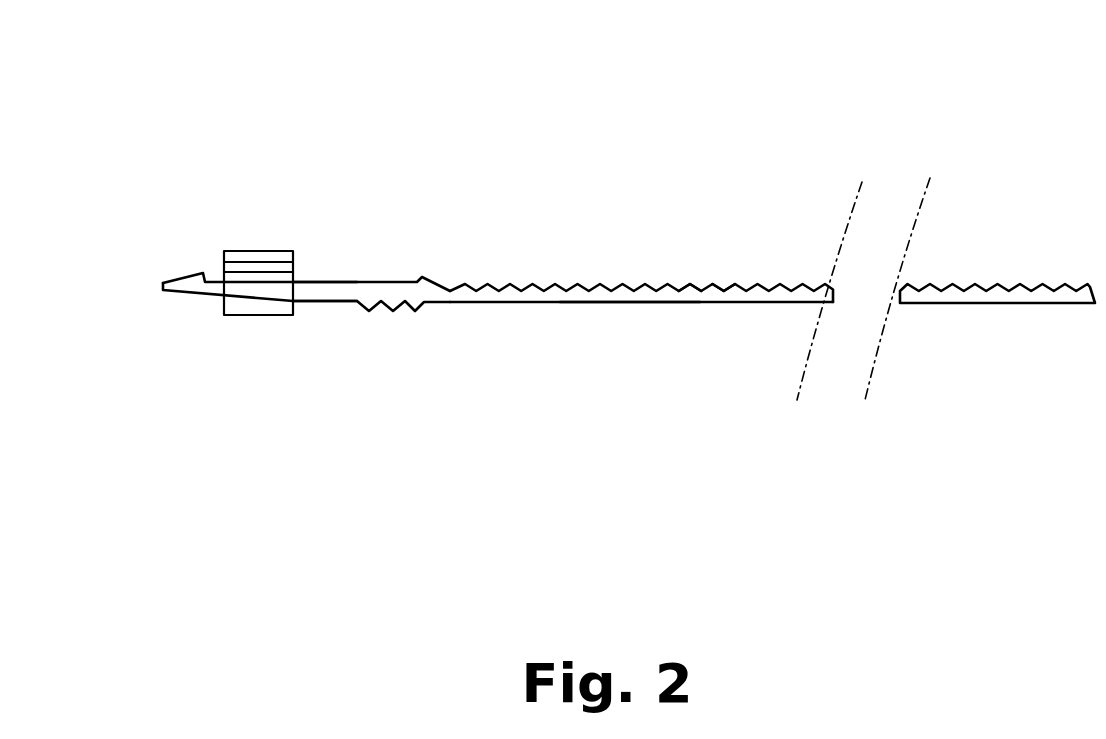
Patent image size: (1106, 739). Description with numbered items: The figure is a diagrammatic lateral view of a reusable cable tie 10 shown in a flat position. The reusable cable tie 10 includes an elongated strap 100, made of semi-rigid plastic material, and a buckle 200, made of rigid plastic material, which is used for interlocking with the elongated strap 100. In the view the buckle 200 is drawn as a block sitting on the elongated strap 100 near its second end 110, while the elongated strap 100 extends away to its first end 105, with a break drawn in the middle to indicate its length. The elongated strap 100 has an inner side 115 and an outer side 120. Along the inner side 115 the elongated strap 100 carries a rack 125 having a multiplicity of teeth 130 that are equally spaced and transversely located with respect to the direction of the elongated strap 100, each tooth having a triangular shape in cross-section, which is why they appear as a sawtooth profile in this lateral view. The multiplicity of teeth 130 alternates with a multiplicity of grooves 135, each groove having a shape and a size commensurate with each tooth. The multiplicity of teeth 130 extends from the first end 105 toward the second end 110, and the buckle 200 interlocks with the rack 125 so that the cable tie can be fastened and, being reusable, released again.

The reusable cable tie 10 is at (642, 71).
The elongated strap 100 is at (542, 312).
The first end 105 is at (1042, 275).
The second end 110 is at (320, 313).
The inner side 115 is at (601, 277).
The outer side 120 is at (669, 311).
The rack 125 is at (623, 295).
The multiplicity of teeth 130 is at (690, 285).
The multiplicity of grooves 135 is at (725, 290).
The buckle 200 is at (247, 323).